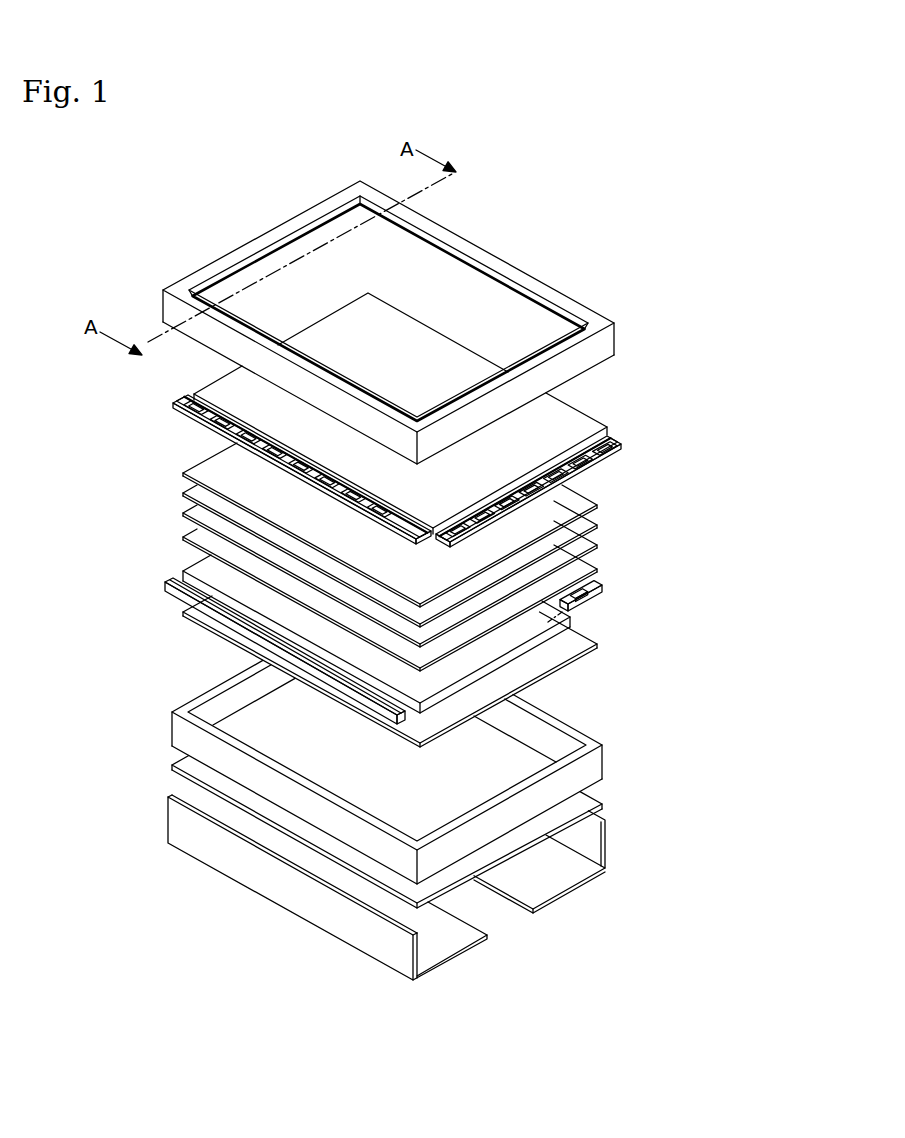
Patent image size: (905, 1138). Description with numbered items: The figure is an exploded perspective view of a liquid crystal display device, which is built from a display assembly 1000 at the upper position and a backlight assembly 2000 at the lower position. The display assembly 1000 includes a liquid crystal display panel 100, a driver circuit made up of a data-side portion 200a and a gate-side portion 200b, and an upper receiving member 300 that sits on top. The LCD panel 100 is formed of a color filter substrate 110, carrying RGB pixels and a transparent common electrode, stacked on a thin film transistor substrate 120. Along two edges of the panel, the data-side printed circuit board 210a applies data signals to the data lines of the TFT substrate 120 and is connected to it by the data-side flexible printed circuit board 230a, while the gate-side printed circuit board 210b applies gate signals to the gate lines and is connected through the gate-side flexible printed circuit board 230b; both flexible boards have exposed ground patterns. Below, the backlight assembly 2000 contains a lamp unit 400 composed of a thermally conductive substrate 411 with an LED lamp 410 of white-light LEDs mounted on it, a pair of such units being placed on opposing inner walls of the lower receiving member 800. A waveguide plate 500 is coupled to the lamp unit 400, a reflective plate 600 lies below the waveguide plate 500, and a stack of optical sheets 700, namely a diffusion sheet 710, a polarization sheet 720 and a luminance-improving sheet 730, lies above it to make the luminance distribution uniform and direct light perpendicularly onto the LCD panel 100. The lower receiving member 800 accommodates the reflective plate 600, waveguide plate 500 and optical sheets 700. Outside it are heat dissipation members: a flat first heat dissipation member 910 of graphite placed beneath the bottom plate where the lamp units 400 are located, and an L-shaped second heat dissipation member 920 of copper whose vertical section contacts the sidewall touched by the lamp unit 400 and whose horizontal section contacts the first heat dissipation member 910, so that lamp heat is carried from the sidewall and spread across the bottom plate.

The display assembly 1000 is at (425, 364).
The upper receiving member 300 is at (612, 347).
The liquid crystal display panel 100 is at (465, 413).
The color filter substrate 110 is at (577, 420).
The thin film transistor substrate 120 is at (605, 433).
The data-side driver circuit 200a is at (592, 487).
The data-side printed circuit board 210a is at (612, 450).
The data-side flexible printed circuit board 230a is at (622, 440).
The gate-side driver circuit 200b is at (236, 463).
The gate-side printed circuit board 210b is at (178, 409).
The gate-side flexible printed circuit board 230b is at (188, 401).
The backlight assembly 2000 is at (447, 711).
The optical sheets 700 is at (460, 557).
The luminance-improving sheet 730 is at (598, 507).
The polarization sheet 720 is at (598, 547).
The diffusion sheet 710 is at (598, 570).
The waveguide plate 500 is at (571, 626).
The lamp unit 400 is at (411, 651).
The LED lamp 410 is at (601, 603).
The thermally conductive substrate 411 is at (598, 591).
The reflective plate 600 is at (572, 663).
The lower receiving member 800 is at (600, 763).
The first heat dissipation member 910 is at (605, 807).
The second heat dissipation member 920 is at (426, 887).